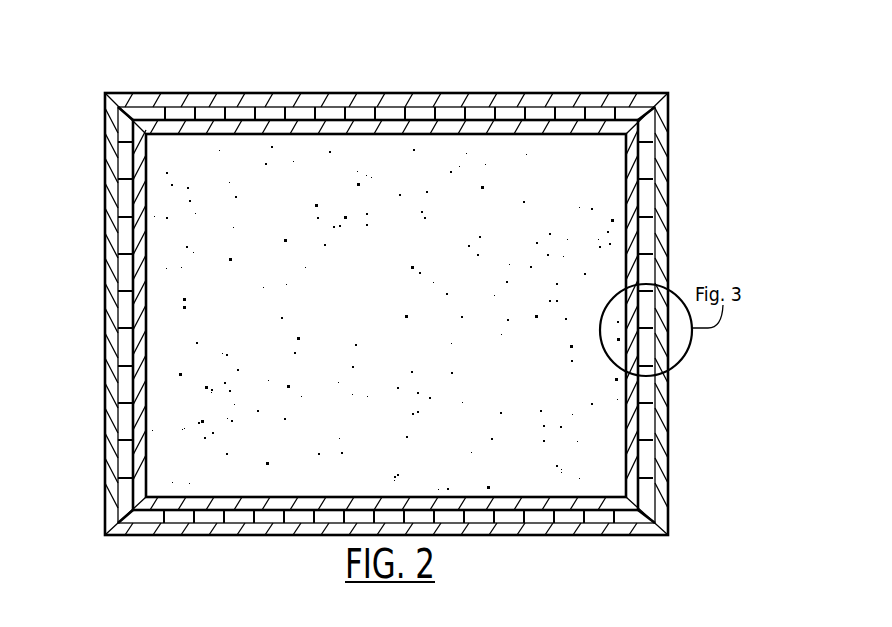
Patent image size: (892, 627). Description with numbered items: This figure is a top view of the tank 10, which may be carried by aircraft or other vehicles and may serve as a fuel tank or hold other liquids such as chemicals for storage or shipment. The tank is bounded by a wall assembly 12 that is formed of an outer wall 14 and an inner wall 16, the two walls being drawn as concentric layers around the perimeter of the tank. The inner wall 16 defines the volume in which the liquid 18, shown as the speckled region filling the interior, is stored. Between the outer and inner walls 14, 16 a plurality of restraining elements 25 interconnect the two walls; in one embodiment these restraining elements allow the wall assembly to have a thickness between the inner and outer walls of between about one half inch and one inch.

The tank 10 is at (694, 114).
The wall assembly 12 is at (648, 163).
The outer wall 14 is at (577, 98).
The inner wall 16 is at (507, 127).
The liquid 18 is at (394, 320).
The restraining elements 25 is at (123, 278).